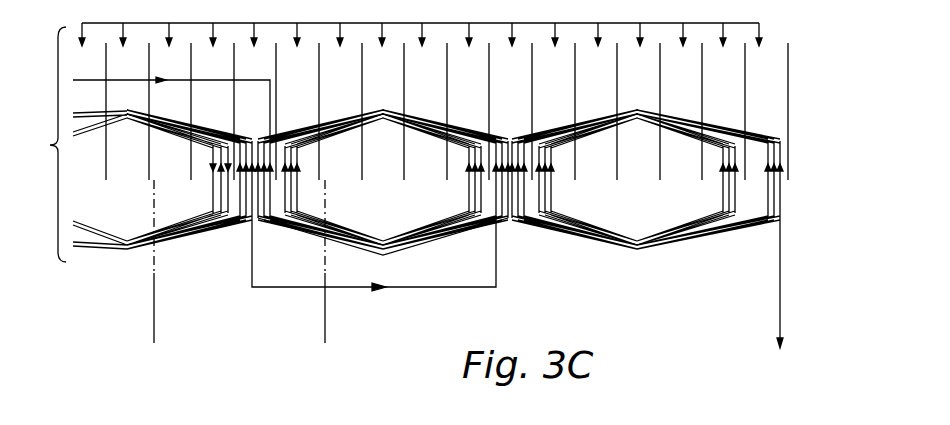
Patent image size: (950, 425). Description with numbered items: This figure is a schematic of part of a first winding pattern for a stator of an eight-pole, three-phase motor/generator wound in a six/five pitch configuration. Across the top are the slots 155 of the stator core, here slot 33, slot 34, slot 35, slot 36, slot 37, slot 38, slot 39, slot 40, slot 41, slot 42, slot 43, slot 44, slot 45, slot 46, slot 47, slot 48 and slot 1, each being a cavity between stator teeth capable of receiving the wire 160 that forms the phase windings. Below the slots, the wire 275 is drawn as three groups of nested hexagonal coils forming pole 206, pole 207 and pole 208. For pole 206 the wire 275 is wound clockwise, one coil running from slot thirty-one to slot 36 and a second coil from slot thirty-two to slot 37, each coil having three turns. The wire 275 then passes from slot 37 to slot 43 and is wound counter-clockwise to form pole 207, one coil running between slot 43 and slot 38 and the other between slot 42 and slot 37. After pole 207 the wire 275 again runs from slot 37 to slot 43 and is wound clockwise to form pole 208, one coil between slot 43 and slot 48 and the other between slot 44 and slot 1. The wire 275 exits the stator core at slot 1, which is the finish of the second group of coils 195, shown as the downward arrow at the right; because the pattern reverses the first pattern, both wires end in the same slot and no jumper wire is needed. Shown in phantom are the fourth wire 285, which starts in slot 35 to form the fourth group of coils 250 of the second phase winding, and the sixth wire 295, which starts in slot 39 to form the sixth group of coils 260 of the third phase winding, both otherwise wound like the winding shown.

The slots 155 is at (614, 23).
The wire 160 is at (50, 145).
The pole 206 is at (138, 215).
The pole 207 is at (412, 220).
The pole 208 is at (673, 212).
The fourth group of coils 250 is at (155, 331).
The sixth group of coils 260 is at (326, 331).
The second group of coils 195 is at (782, 341).
The fourth wire 285 is at (156, 312).
The sixth wire 295 is at (326, 330).
The second wire 275 is at (778, 286).
The slot 1 is at (762, 49).
The slot 33 is at (84, 49).
The slot 34 is at (125, 49).
The slot 35 is at (169, 49).
The slot 36 is at (211, 49).
The slot 37 is at (253, 49).
The slot 38 is at (294, 49).
The slot 39 is at (339, 49).
The slot 40 is at (378, 49).
The slot 41 is at (420, 49).
The slot 42 is at (464, 49).
The slot 43 is at (508, 49).
The slot 44 is at (552, 49).
The slot 45 is at (595, 49).
The slot 46 is at (637, 49).
The slot 47 is at (682, 49).
The slot 48 is at (722, 49).